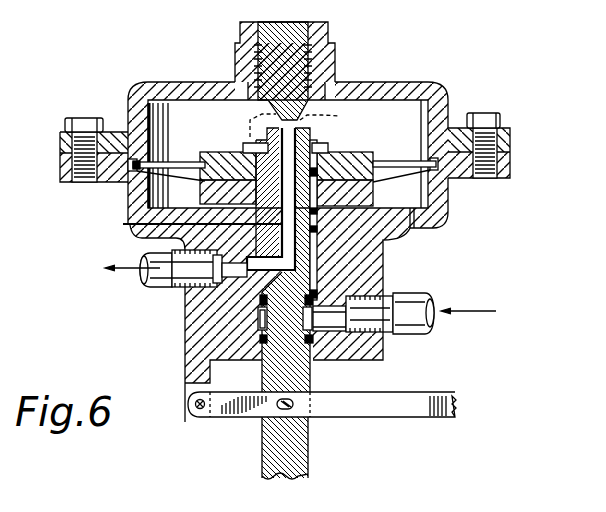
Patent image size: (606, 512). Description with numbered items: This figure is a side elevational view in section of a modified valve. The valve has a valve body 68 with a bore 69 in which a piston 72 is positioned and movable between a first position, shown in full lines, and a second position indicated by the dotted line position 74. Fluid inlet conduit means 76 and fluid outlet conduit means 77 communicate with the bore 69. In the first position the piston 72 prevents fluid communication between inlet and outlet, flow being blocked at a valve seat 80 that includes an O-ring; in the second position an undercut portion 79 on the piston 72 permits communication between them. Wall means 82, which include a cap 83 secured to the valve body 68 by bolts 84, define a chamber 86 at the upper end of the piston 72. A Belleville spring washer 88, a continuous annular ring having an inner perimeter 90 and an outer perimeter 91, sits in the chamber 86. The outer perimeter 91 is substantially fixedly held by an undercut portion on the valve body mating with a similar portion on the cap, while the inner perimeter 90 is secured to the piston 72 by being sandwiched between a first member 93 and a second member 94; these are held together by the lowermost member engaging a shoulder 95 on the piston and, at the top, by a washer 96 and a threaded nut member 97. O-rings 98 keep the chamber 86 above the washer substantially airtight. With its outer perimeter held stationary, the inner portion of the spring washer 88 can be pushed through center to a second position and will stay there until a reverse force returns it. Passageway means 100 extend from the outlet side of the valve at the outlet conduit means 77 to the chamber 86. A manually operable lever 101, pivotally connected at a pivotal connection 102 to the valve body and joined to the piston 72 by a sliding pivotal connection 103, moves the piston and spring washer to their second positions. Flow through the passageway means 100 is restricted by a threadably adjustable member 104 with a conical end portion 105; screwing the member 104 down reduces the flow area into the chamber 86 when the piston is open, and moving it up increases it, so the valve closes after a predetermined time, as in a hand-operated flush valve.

The valve body 68 is at (186, 343).
The bore 69 is at (320, 210).
The piston 72 is at (303, 370).
The dotted line position 74 is at (335, 116).
The fluid inlet conduit means 76 is at (432, 330).
The fluid outlet conduit means 77 is at (185, 268).
The undercut portion 79 is at (262, 320).
The valve seat 80 is at (315, 300).
The wall means 82 is at (425, 180).
The cap 83 is at (390, 82).
The bolts 84 is at (78, 117).
The chamber 86 is at (288, 154).
The Belleville spring washer 88 is at (178, 160).
The inner perimeter 90 is at (370, 175).
The outer perimeter 91 is at (430, 178).
The first member 93 is at (200, 195).
The second member 94 is at (197, 158).
The shoulder 95 is at (413, 228).
The washer 96 is at (250, 147).
The threaded nut member 97 is at (252, 138).
The O-rings 98 is at (366, 175).
The passageway means 100 is at (188, 217).
The manually operable lever 101 is at (355, 406).
The pivotal connection 102 is at (203, 409).
The sliding pivotal connection 103 is at (277, 408).
The threadably adjustable member 104 is at (235, 43).
The conical end portion 105 is at (312, 102).